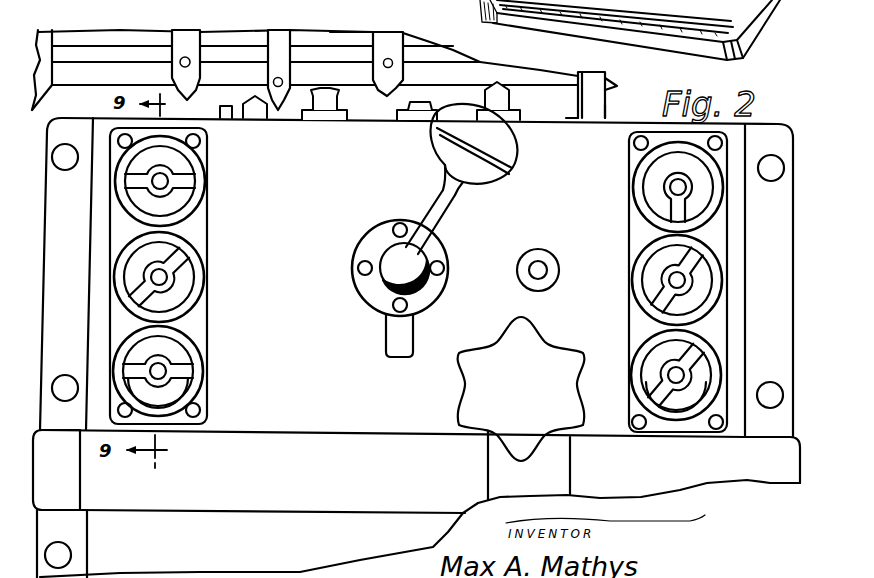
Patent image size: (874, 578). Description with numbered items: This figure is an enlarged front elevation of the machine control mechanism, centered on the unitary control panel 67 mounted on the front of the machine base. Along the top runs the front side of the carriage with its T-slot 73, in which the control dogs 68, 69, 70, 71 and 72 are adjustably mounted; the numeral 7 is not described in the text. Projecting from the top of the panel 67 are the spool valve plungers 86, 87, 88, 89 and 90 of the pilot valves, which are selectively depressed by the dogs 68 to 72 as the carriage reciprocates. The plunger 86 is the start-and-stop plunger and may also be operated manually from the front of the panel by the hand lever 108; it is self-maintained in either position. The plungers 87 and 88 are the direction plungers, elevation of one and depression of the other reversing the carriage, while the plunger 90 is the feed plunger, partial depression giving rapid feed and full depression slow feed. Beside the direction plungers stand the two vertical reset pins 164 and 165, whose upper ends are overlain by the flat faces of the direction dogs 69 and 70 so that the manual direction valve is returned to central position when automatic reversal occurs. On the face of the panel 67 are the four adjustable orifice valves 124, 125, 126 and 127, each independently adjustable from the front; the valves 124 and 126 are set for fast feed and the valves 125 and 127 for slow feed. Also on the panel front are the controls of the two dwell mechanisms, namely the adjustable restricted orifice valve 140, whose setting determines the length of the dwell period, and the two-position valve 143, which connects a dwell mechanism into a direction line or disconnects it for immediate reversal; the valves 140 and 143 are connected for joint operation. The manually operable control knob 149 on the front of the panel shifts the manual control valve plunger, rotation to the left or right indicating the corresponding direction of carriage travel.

The rail top edge 7 is at (348, 40).
The control panel 67 is at (252, 498).
The control dog 68 is at (291, 42).
The direction dog 69 is at (45, 92).
The direction dog 70 is at (606, 97).
The control dog 71 is at (196, 42).
The control dog 72 is at (403, 42).
The T-slot 73 is at (118, 58).
The spool valve plunger 86 is at (420, 102).
The direction plunger 87 is at (258, 118).
The direction plunger 88 is at (578, 120).
The spool valve plunger 89 is at (504, 100).
The feed plunger 90 is at (324, 106).
The hand lever 108 is at (510, 175).
The adjustable orifice valve 124 is at (210, 184).
The adjustable orifice valve 125 is at (210, 278).
The adjustable orifice valve 126 is at (633, 197).
The adjustable orifice valve 127 is at (633, 272).
The adjustable restricted orifice valve 140 is at (210, 366).
The two-position valve 143 is at (208, 376).
The control knob 149 is at (567, 351).
The reset pin 164 is at (221, 110).
The reset pin 165 is at (606, 112).